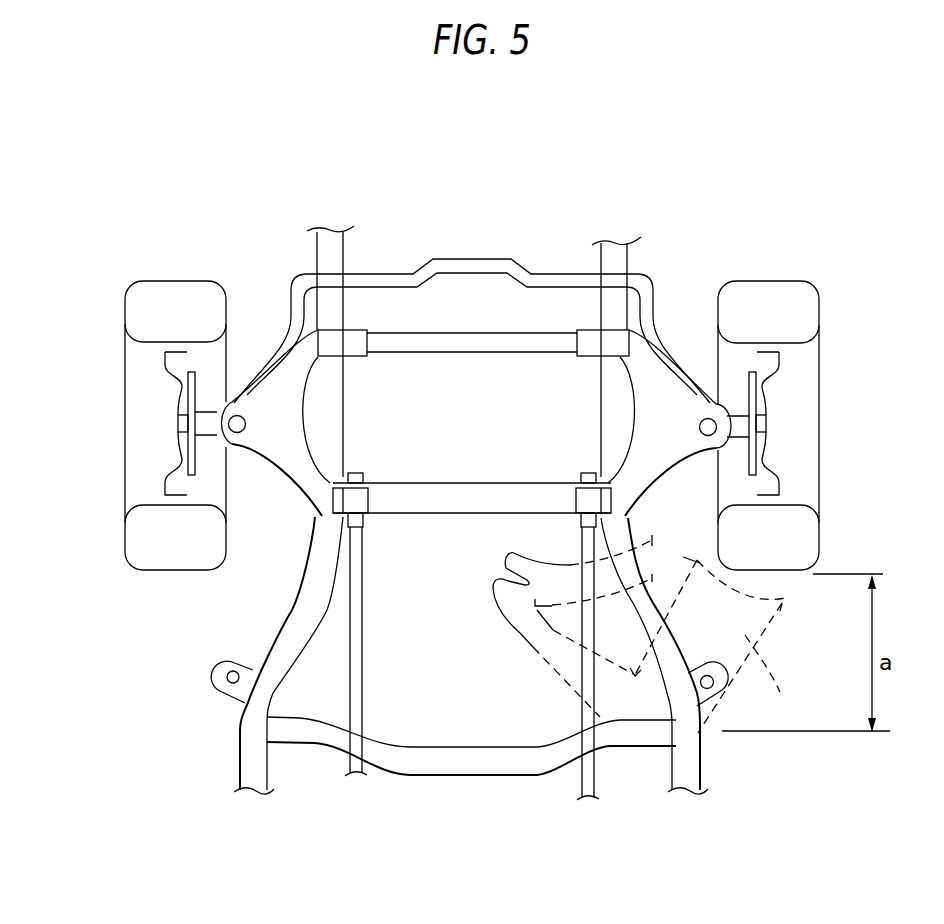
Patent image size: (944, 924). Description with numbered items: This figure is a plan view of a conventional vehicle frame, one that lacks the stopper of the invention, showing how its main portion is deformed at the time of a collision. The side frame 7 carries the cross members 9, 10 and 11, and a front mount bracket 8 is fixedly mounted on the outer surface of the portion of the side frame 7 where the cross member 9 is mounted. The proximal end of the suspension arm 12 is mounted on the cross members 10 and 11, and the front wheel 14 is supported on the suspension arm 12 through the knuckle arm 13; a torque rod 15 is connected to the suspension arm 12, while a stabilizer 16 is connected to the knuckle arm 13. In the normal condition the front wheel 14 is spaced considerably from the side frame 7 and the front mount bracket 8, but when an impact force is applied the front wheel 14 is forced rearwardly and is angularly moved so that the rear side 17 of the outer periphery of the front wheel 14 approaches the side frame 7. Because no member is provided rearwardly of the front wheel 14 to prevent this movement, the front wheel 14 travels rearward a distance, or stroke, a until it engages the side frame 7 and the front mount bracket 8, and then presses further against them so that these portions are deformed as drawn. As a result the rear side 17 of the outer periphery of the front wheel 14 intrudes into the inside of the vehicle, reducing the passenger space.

The side frame 7 is at (250, 743).
The front mount bracket 8 is at (227, 688).
The cross member 9 is at (450, 760).
The cross member 10 is at (437, 513).
The cross member 11 is at (489, 343).
The suspension arm 12 is at (288, 443).
The knuckle arm 13 is at (205, 413).
The front wheel 14 is at (140, 540).
The torque rod 15 is at (355, 655).
The stabilizer 16 is at (487, 268).
The rear side of the outer periphery of the front wheel 17 is at (158, 576).